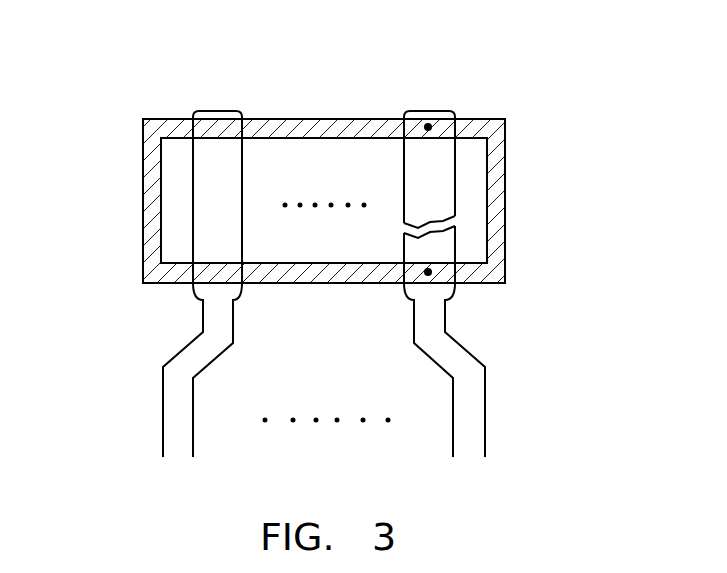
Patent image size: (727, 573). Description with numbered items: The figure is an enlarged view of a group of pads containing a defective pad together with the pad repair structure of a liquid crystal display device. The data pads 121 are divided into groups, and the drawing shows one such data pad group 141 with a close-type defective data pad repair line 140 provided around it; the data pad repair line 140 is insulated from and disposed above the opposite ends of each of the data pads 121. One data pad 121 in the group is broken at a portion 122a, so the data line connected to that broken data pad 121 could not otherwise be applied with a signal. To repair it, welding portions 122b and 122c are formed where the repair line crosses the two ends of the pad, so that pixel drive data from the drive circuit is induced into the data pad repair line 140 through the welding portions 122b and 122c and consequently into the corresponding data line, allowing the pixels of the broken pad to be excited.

The defective data pad repair line 140 is at (150, 218).
The data pad group 141 is at (289, 88).
The data pad 121 is at (518, 235).
The broken portion 122a is at (445, 225).
The welding portion 122b is at (428, 127).
The welding portion 122c is at (428, 272).